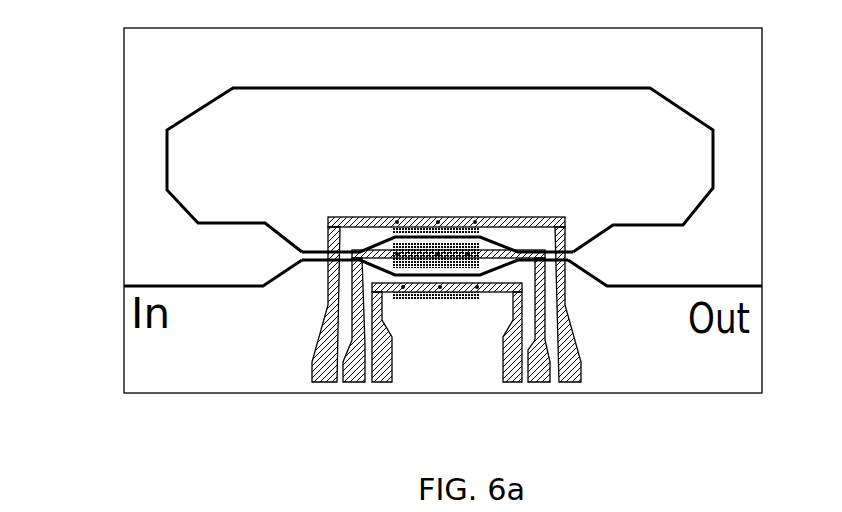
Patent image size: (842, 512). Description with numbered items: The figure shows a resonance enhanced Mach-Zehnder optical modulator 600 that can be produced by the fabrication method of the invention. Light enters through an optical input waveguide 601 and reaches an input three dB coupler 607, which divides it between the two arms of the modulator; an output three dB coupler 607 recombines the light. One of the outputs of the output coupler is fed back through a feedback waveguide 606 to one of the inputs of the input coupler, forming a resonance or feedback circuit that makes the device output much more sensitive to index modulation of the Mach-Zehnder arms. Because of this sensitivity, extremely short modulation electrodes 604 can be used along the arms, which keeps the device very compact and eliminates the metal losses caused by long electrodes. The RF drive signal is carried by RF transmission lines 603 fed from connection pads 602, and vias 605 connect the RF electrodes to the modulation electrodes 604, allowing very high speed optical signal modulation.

The modulator 600 is at (443, 210).
The optical input waveguide 601 is at (175, 285).
The connection pads 602 is at (356, 370).
The RF transmission lines 603 is at (378, 315).
The modulation electrodes 604 is at (427, 293).
The vias 605 is at (472, 223).
The feedback waveguide 606 is at (402, 88).
The 3 dB coupler 607 is at (320, 246).